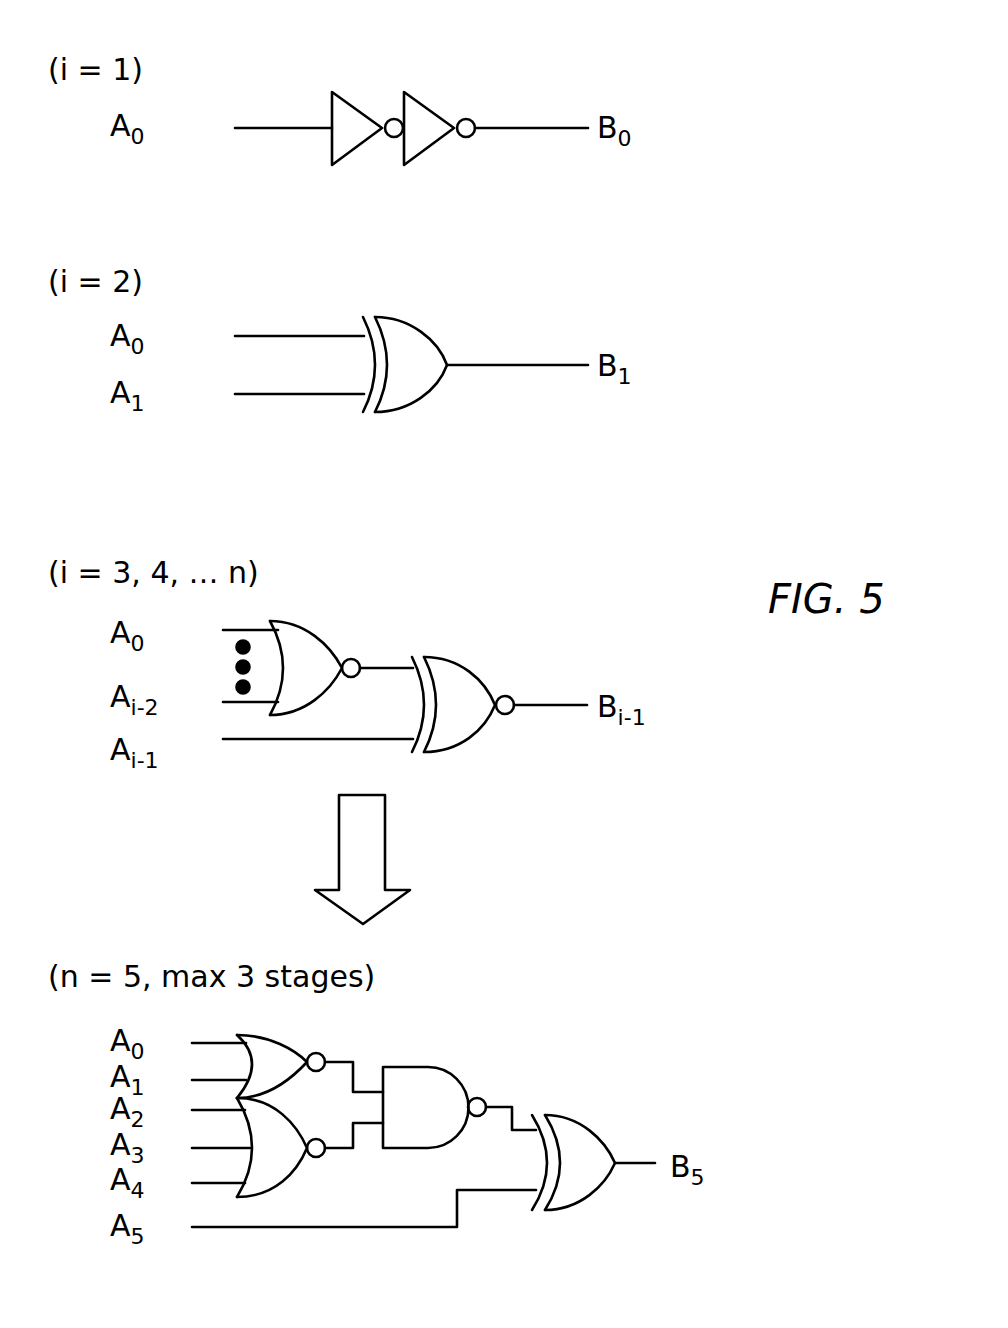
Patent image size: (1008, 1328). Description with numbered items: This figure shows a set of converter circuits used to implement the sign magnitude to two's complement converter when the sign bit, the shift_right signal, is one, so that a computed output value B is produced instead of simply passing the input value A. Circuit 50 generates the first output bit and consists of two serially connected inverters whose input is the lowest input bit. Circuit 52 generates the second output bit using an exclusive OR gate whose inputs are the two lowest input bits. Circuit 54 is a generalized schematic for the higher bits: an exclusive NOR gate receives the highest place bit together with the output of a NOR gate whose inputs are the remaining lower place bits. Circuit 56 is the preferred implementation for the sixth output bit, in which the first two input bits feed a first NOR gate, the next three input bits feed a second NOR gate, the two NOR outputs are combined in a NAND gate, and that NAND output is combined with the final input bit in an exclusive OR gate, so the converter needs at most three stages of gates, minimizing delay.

The circuit 50 is at (452, 78).
The circuit 52 is at (452, 318).
The circuit 54 is at (438, 618).
The circuit 56 is at (542, 1078).